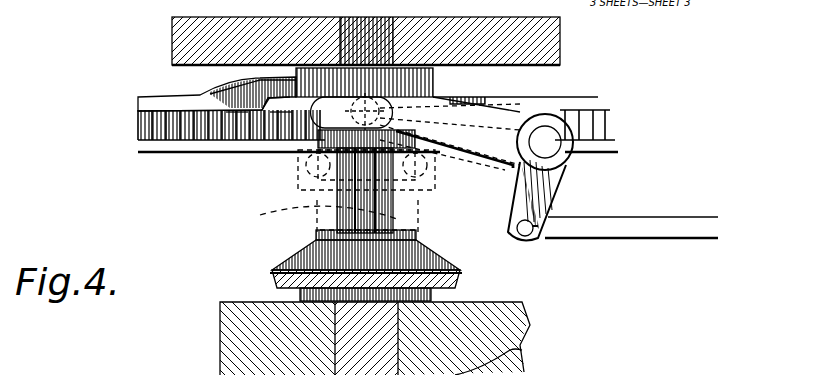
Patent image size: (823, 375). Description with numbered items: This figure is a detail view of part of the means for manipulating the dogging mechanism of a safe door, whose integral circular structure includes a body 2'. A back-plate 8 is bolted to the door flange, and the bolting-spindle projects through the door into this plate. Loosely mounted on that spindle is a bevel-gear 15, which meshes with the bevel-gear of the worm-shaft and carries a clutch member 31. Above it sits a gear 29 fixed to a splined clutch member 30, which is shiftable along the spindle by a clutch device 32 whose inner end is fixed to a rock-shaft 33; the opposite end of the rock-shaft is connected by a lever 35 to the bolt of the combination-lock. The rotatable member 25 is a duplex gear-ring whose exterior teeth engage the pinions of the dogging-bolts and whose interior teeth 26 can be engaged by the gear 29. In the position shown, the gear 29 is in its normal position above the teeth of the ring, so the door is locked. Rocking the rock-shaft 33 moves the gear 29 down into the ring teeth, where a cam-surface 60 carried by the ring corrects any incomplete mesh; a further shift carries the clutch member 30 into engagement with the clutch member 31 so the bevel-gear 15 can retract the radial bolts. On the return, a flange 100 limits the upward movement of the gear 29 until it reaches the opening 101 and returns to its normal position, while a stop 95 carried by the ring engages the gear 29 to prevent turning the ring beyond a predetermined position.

The back-plate 8 is at (547, 53).
The gear 29 is at (433, 86).
The flange 100 is at (165, 103).
The stop 95 is at (245, 90).
The opening 101 is at (282, 104).
The rotatable member 25 is at (188, 125).
The cam-surface 60 is at (238, 112).
The teeth 26 is at (282, 125).
The clutch device 32 is at (497, 112).
The splined clutch member 30 is at (318, 140).
The clutch member 31 is at (400, 225).
The bevel-gear 15 is at (458, 280).
The rock-shaft 33 is at (553, 147).
The lever 35 is at (634, 218).
The body 2' is at (383, 338).